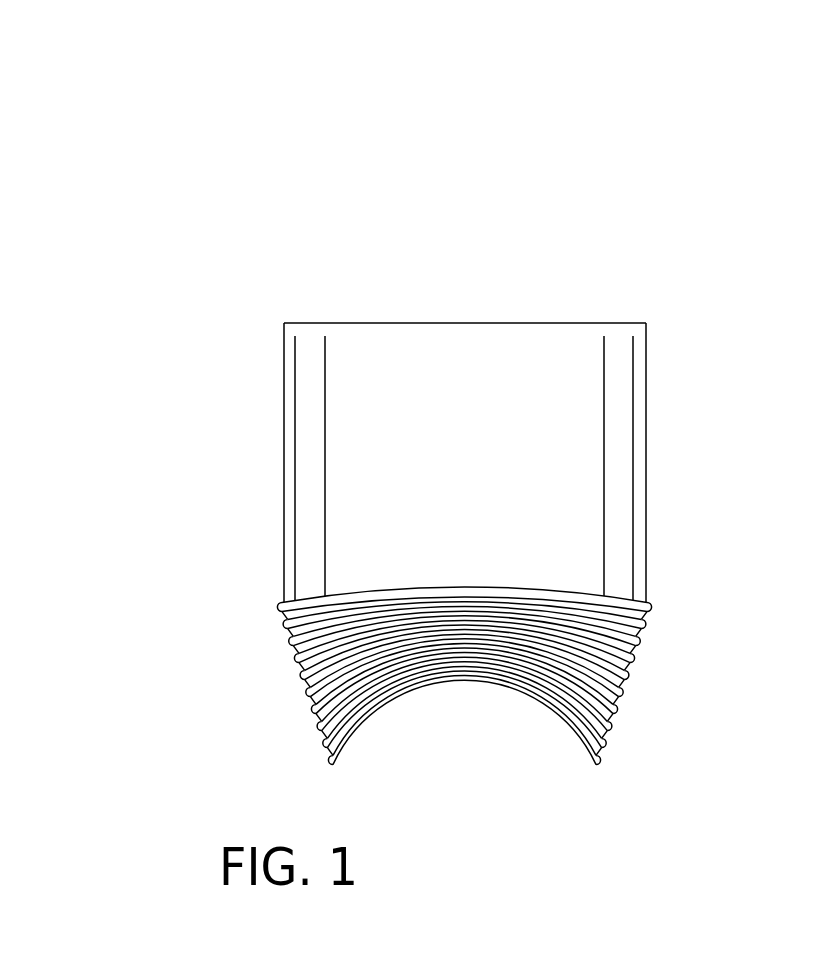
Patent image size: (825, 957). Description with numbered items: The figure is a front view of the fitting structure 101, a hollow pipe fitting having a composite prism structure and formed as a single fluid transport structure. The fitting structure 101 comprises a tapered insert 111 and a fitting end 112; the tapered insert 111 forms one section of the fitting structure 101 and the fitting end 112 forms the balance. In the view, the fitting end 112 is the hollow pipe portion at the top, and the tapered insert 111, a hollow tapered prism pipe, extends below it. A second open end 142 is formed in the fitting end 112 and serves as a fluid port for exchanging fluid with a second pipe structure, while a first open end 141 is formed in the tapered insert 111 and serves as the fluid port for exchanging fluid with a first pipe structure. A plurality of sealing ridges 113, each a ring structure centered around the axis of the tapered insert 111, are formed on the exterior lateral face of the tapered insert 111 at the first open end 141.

The fitting structure 101 is at (298, 158).
The tapered insert 111 is at (277, 657).
The fitting end 112 is at (582, 508).
The plurality of sealing ridges 113 is at (590, 655).
The first open end 141 is at (468, 681).
The second open end 142 is at (450, 323).